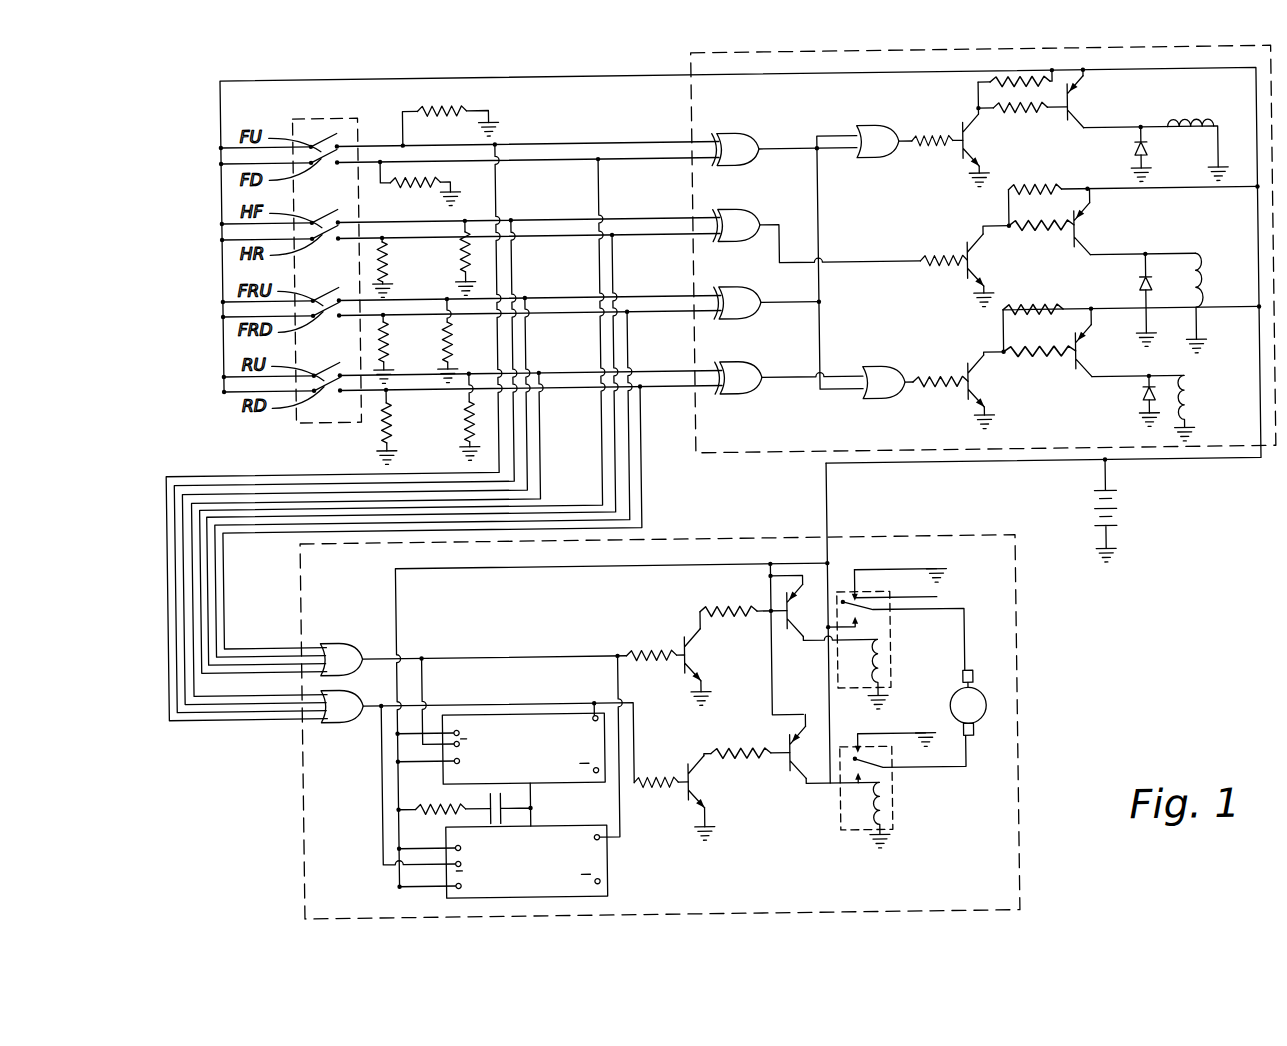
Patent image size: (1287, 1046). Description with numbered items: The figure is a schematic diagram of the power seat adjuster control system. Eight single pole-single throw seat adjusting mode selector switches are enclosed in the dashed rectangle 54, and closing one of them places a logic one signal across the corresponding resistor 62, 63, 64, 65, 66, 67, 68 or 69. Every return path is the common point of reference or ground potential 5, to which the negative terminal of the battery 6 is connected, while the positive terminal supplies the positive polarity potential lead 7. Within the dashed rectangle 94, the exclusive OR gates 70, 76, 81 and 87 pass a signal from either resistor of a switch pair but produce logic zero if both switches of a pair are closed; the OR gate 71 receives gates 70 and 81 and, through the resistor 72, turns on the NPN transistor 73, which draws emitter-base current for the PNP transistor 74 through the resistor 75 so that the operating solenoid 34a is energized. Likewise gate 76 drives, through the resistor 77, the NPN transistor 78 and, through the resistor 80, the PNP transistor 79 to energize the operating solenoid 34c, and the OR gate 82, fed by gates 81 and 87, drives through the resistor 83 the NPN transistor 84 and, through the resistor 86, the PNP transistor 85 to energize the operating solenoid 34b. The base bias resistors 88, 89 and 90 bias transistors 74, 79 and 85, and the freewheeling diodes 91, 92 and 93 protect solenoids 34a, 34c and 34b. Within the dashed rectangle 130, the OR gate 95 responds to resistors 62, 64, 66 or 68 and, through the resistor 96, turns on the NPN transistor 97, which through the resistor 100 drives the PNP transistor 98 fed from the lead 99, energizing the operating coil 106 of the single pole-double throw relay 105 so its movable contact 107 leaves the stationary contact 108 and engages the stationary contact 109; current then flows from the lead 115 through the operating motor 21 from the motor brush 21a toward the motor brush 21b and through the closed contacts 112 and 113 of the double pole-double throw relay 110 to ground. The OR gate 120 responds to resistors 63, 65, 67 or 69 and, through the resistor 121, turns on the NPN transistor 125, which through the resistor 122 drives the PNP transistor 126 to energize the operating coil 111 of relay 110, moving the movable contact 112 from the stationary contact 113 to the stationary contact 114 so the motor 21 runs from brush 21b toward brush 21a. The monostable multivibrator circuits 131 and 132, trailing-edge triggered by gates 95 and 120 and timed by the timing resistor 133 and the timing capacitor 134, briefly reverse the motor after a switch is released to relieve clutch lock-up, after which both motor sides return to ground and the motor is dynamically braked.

The point of reference or ground potential 5 is at (498, 130).
The battery 6 is at (1112, 520).
The positive polarity potential lead 7 is at (1120, 473).
The operating motor 21 is at (982, 707).
The motor brush 21a is at (968, 748).
The motor brush 21b is at (968, 680).
The operating solenoid 34a is at (1192, 136).
The operating solenoid 34b is at (1190, 410).
The operating solenoid 34c is at (1205, 282).
The dashed rectangle 54 is at (345, 119).
The resistor 62 is at (458, 113).
The resistor 63 is at (425, 187).
The resistor 64 is at (468, 260).
The resistor 65 is at (384, 268).
The resistor 66 is at (449, 352).
The resistor 67 is at (376, 346).
The resistor 68 is at (463, 422).
The resistor 69 is at (379, 430).
The exclusive OR gate 70 is at (750, 145).
The OR gate 71 is at (880, 140).
The resistor 72 is at (940, 147).
The NPN transistor 73 is at (980, 158).
The PNP transistor 74 is at (1078, 118).
The resistor 75 is at (1025, 119).
The exclusive OR gate 76 is at (760, 228).
The resistor 77 is at (940, 268).
The NPN transistor 78 is at (978, 266).
The PNP transistor 79 is at (1090, 250).
The resistor 80 is at (1045, 241).
The exclusive OR gate 81 is at (760, 312).
The OR gate 82 is at (885, 400).
The resistor 83 is at (940, 389).
The NPN transistor 84 is at (962, 400).
The PNP transistor 85 is at (1085, 350).
The resistor 86 is at (1030, 364).
The exclusive OR gate 87 is at (760, 390).
The base bias resistor 88 is at (1020, 90).
The base bias resistor 89 is at (1035, 198).
The base bias resistor 90 is at (1035, 318).
The freewheeling diode 91 is at (1134, 152).
The freewheeling diode 92 is at (1135, 292).
The freewheeling diode 93 is at (1138, 405).
The dashed rectangle 94 is at (750, 462).
The OR gate 95 is at (345, 728).
The resistor 96 is at (663, 792).
The NPN transistor 97 is at (690, 793).
The PNP transistor 98 is at (781, 755).
The lead 99 is at (764, 700).
The resistor 100 is at (712, 758).
The single pole-double throw relay 105 is at (875, 785).
The operating coil 106 is at (878, 815).
The movable contact 107 is at (876, 779).
The stationary contact 108 is at (852, 745).
The stationary contact 109 is at (845, 789).
The double pole-double throw relay 110 is at (896, 624).
The operating coil 111 is at (874, 674).
The movable contact 112 is at (860, 616).
The stationary contact 113 is at (850, 582).
The stationary contact 114 is at (855, 632).
The lead 115 is at (821, 560).
The OR gate 120 is at (345, 645).
The resistor 121 is at (650, 658).
The resistor 122 is at (716, 614).
The NPN transistor 125 is at (692, 658).
The PNP transistor 126 is at (775, 650).
The dashed rectangle 130 is at (1012, 712).
The monostable multivibrator circuit 131 is at (600, 880).
The monostable multivibrator circuit 132 is at (548, 715).
The timing resistor 133 is at (408, 810).
The timing capacitor 134 is at (503, 807).